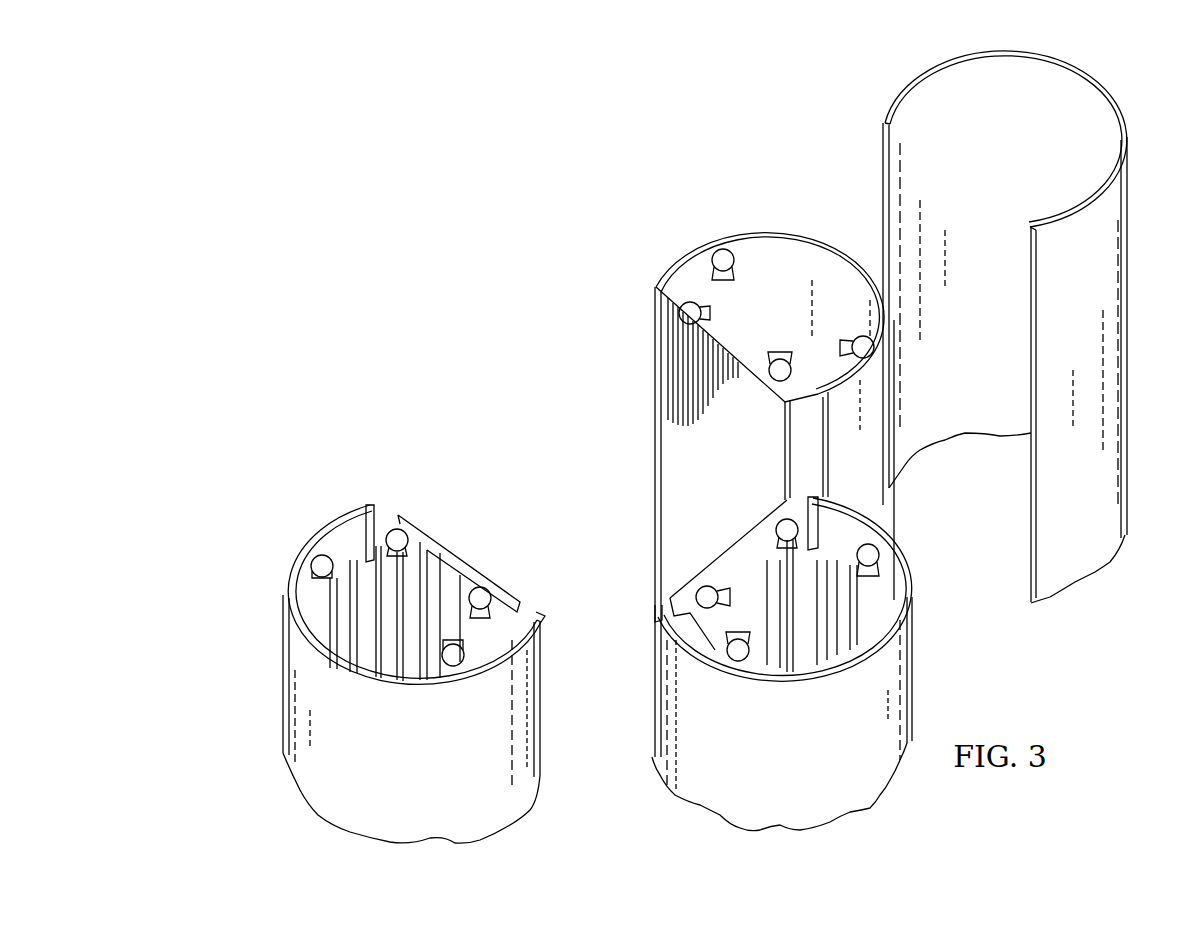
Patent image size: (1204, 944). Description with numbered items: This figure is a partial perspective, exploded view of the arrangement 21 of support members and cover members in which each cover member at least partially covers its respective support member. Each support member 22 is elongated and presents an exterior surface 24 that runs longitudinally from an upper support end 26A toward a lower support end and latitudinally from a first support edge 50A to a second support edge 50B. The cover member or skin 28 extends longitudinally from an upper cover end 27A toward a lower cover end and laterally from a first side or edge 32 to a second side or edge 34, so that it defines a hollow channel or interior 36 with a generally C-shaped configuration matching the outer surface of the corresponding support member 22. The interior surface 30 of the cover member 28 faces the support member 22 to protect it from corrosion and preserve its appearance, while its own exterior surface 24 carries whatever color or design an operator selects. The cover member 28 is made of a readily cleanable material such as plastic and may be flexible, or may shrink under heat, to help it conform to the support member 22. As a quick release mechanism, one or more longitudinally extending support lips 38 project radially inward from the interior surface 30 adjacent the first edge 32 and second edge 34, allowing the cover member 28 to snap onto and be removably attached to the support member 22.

The shell and insert assembly 21 is at (568, 220).
The support member 22 is at (478, 560).
The exterior surface 24 is at (318, 793).
The upper support end 26A is at (305, 570).
The upper cover end 27A is at (372, 505).
The cover member 28 is at (283, 712).
The interior surface 30 is at (1092, 100).
The first edge 32 is at (545, 616).
The second edge 34 is at (378, 508).
The hollow channel 36 is at (320, 656).
The support lip 38 is at (400, 516).
The first support edge 50A is at (655, 296).
The second support edge 50B is at (406, 540).